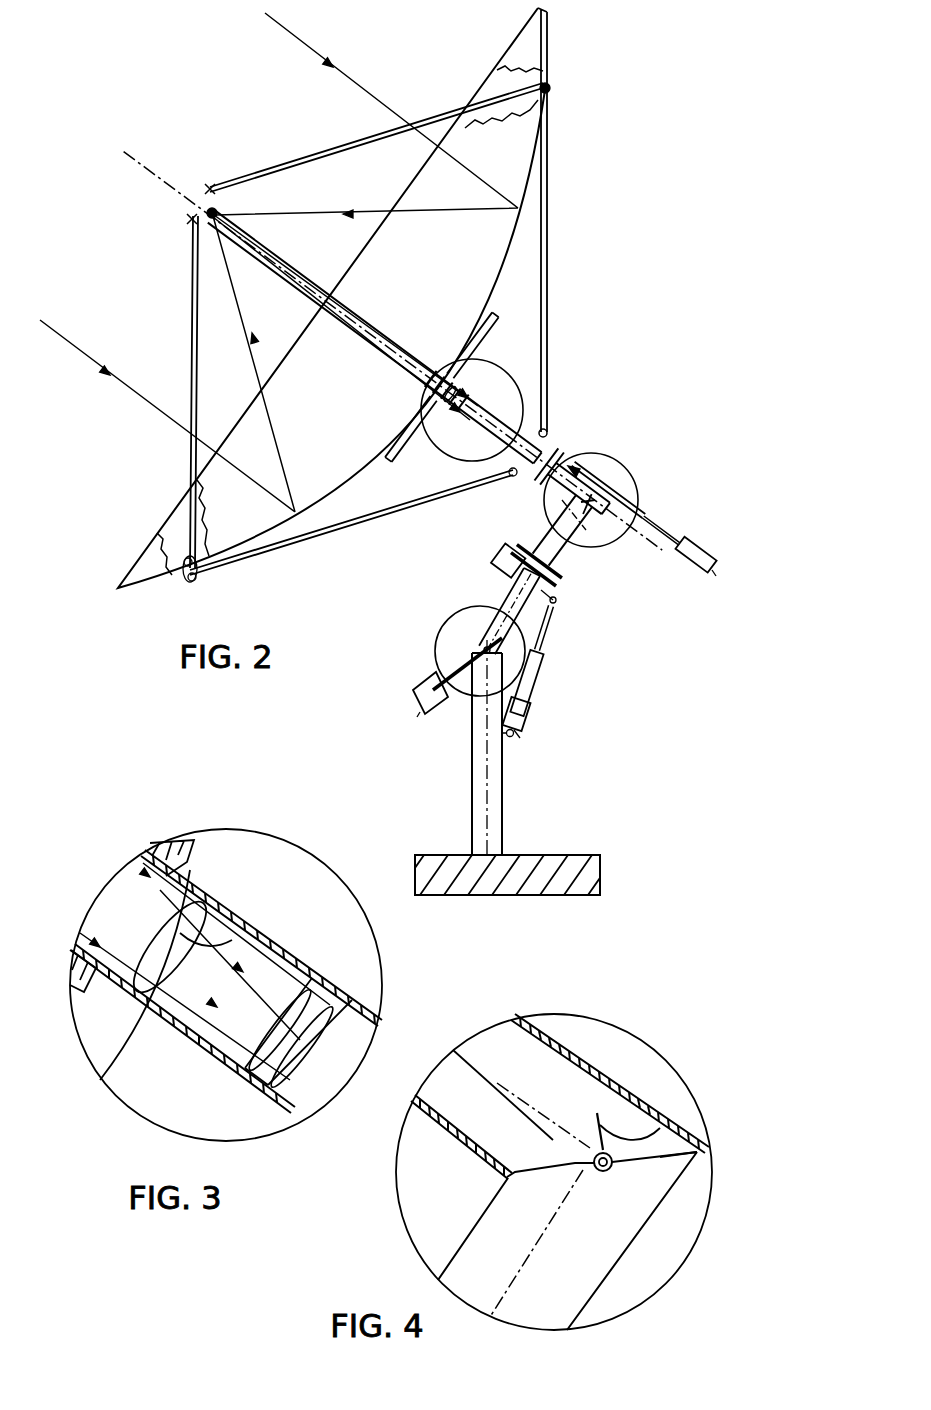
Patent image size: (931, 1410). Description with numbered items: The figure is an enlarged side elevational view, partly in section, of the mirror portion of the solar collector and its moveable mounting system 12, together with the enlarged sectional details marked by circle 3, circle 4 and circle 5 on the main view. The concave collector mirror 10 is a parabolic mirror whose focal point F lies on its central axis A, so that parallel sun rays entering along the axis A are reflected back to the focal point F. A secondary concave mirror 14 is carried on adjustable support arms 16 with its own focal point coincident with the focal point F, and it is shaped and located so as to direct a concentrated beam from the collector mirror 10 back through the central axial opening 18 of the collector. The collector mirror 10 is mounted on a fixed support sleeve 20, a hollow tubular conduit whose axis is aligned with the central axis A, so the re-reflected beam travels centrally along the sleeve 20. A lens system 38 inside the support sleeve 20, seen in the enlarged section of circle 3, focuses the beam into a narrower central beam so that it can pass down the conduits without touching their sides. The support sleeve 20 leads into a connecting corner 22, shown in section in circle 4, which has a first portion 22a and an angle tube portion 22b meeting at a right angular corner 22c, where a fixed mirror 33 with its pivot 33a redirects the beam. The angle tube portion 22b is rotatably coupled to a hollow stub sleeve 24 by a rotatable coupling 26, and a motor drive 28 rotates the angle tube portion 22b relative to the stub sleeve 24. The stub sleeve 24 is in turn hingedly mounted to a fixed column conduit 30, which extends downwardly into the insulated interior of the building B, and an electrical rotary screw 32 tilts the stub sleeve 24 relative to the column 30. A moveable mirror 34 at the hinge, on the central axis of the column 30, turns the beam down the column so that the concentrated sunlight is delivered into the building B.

In FIG. 2, the concave collector mirror 10 is at (528, 251).
In FIG. 2, the moveable mounting system 12 is at (395, 579).
In FIG. 2, the secondary concave mirror 14 is at (226, 212).
In FIG. 2, the adjustable support arms 16 is at (447, 118).
In FIG. 2, the central axial opening 18 is at (434, 352).
In FIG. 2, the fixed support sleeve 20 is at (547, 430).
In FIG. 3, the fixed support sleeve 20 is at (157, 1020).
In FIG. 2, the connecting corner 22 is at (632, 476).
In FIG. 4, the connecting corner 22 is at (648, 1062).
In FIG. 2, the first portion 22a is at (577, 470).
In FIG. 4, the first portion 22a is at (592, 1062).
In FIG. 2, the angle tube portion 22b is at (574, 548).
In FIG. 4, the angle tube portion 22b is at (477, 1230).
In FIG. 2, the right angular corner 22c is at (644, 520).
In FIG. 4, the right angular corner 22c is at (660, 1157).
In FIG. 2, the hollow stub sleeve 24 is at (500, 603).
In FIG. 2, the rotatable coupling 26 is at (540, 548).
In FIG. 2, the motor drive 28 is at (502, 567).
In FIG. 2, the fixed column conduit 30 is at (503, 815).
In FIG. 2, the electrical rotary screw 32 is at (548, 675).
In FIG. 2, the fixed mirror 33 is at (593, 512).
In FIG. 4, the fixed mirror 33 is at (597, 1125).
In FIG. 4, the pin head 33a is at (600, 1171).
In FIG. 2, the moveable mirror 34 is at (460, 646).
In FIG. 2, the lens system 38 is at (492, 395).
In FIG. 3, the lens system 38 is at (302, 1023).
In FIG. 2, the circle 3 is at (505, 370).
In FIG. 2, the circle 4 is at (548, 516).
In FIG. 2, the detail circle for FIG. 5 is at (438, 636).
In FIG. 2, the central axis A is at (147, 162).
In FIG. 2, the building B is at (440, 855).
In FIG. 2, the focal point F is at (245, 220).